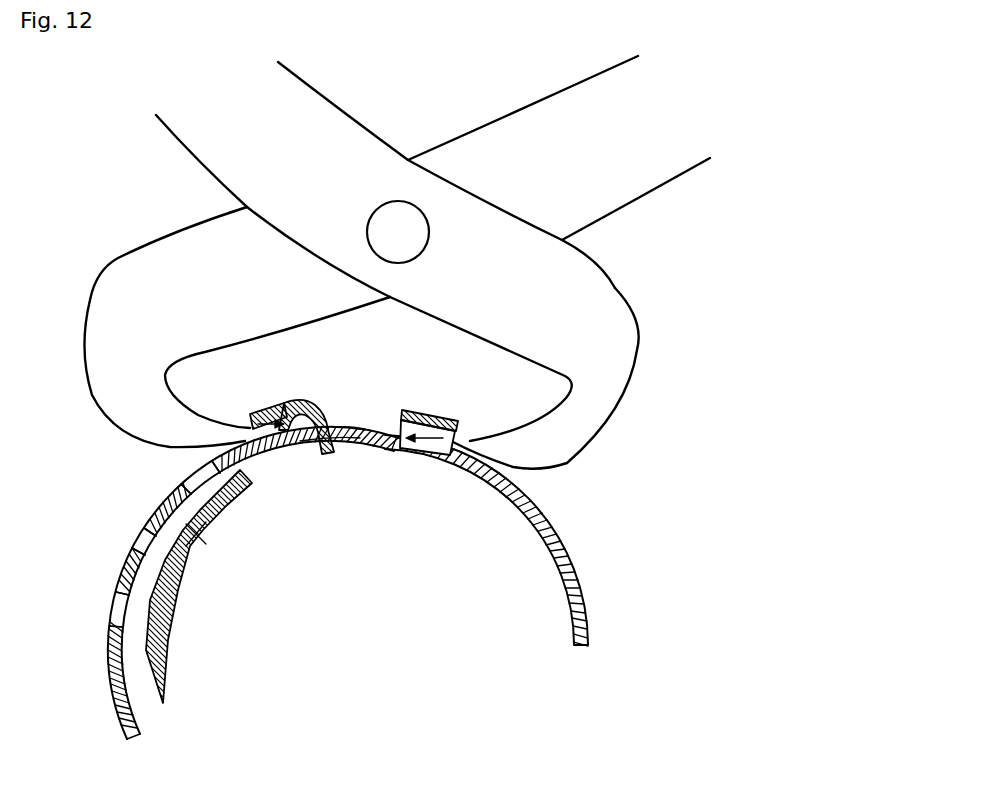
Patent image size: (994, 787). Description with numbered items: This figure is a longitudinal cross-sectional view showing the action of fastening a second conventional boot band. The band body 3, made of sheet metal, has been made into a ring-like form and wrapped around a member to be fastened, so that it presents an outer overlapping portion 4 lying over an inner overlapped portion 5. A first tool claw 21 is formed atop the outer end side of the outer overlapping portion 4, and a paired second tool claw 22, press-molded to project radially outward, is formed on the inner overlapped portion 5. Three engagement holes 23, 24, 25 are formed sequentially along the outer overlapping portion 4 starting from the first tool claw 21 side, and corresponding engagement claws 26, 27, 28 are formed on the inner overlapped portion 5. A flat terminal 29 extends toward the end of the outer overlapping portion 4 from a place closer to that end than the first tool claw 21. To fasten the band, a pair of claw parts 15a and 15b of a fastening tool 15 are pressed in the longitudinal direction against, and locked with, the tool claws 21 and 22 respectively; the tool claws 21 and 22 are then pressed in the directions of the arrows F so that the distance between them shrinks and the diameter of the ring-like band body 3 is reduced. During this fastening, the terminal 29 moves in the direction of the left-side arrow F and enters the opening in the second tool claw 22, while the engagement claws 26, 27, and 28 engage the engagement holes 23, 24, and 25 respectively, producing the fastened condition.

The band body 3 is at (596, 586).
The outer overlapping portion 4 is at (143, 520).
The inner overlapped portion 5 is at (327, 452).
The fastening tool 15 is at (624, 285).
The claw part 15a is at (233, 432).
The claw part 15b is at (477, 440).
The first tool claw 21 is at (266, 408).
The second tool claw 22 is at (411, 410).
The engagement hole 23 is at (207, 473).
The engagement hole 24 is at (140, 542).
The engagement hole 25 is at (113, 600).
The engagement claw 26 is at (277, 470).
The engagement claw 27 is at (242, 492).
The engagement claw 28 is at (193, 535).
The flat terminal 29 is at (345, 437).
The arrow F is at (285, 415).